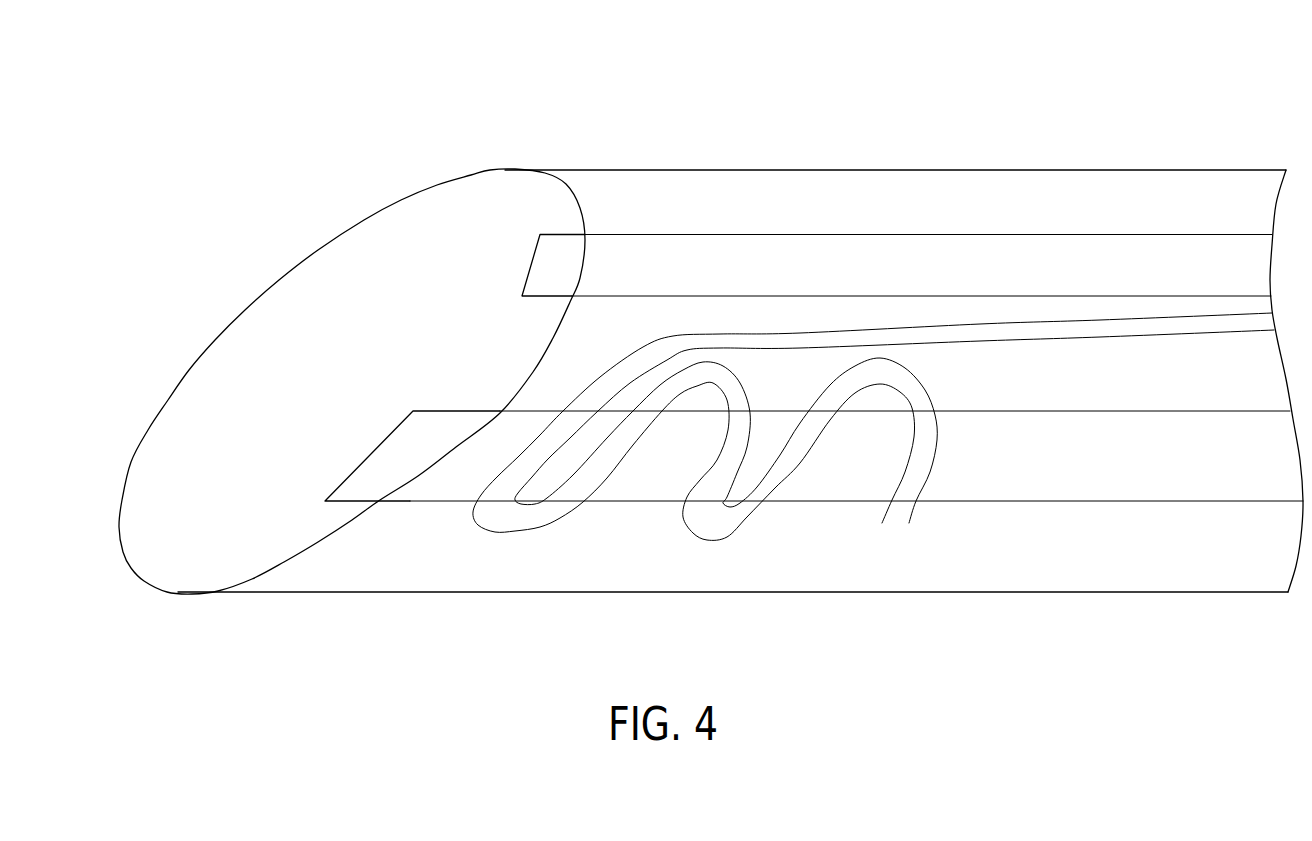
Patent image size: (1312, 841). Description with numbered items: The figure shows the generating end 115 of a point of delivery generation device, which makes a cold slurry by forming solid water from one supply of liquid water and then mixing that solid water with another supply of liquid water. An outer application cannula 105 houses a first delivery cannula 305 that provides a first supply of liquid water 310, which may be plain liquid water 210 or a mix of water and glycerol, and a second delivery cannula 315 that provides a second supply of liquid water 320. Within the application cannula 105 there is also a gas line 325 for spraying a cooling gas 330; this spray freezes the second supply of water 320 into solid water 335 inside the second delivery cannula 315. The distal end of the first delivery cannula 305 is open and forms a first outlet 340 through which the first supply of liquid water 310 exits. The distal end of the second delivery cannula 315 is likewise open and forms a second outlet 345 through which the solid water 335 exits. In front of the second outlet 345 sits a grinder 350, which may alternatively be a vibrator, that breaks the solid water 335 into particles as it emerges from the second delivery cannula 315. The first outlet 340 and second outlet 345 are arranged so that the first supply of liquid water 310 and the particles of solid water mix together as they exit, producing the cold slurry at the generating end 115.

The application cannula 105 is at (1144, 170).
The generating end 115 is at (224, 196).
The liquid water 210 is at (579, 102).
The first delivery cannula 305 is at (921, 234).
The first supply of liquid water 310 is at (792, 275).
The second delivery cannula 315 is at (1004, 501).
The second supply of liquid water 320 is at (1076, 487).
The gas line 325 is at (984, 318).
The cooling gas 330 is at (722, 520).
The solid water 335 is at (496, 478).
The first outlet 340 is at (530, 267).
The second outlet 345 is at (367, 457).
The grinder 350 is at (347, 561).